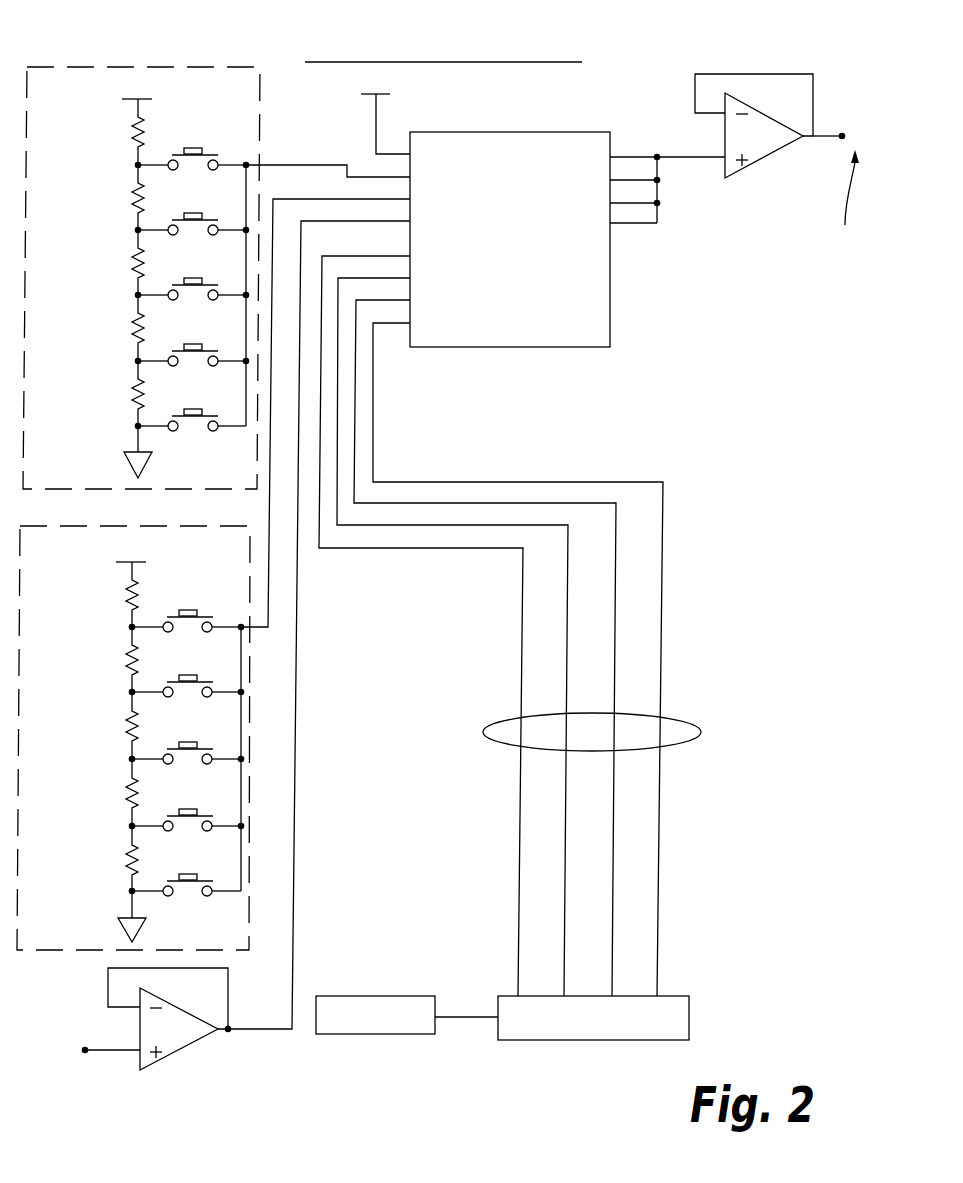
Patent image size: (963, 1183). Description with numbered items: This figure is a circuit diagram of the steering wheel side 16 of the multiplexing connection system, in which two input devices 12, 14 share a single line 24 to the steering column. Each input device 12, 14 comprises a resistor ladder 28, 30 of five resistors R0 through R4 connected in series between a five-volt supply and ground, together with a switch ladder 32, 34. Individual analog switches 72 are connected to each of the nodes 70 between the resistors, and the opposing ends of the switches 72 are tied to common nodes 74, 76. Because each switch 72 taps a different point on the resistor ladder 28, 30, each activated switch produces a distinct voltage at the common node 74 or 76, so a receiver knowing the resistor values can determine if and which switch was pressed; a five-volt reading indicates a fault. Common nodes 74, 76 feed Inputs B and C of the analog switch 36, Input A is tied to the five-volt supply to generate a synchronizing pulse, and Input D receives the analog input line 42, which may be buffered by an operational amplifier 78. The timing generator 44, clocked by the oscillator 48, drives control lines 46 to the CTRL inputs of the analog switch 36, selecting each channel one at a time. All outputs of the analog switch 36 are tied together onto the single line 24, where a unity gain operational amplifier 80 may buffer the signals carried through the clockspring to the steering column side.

The input device 12 is at (62, 67).
The input device 14 is at (58, 526).
The steering wheel side 16 is at (622, 56).
The single wire or line 24 is at (710, 158).
The resistor ladder 28 is at (103, 428).
The resistor ladder 30 is at (97, 888).
The switch ladder 32 is at (193, 140).
The switch ladder 34 is at (190, 600).
The analog switch 36 is at (490, 132).
The analog input line 42 is at (112, 1053).
The timing generator 44 is at (606, 1040).
The control lines 46 is at (700, 725).
The oscillator 48 is at (392, 1034).
The nodes 70 is at (140, 168).
The individual analog switches 72 is at (206, 218).
The common node 74 is at (247, 163).
The common node 76 is at (243, 628).
The operational amplifier 78 is at (170, 1030).
The unity gain operational amplifier 80 is at (765, 157).